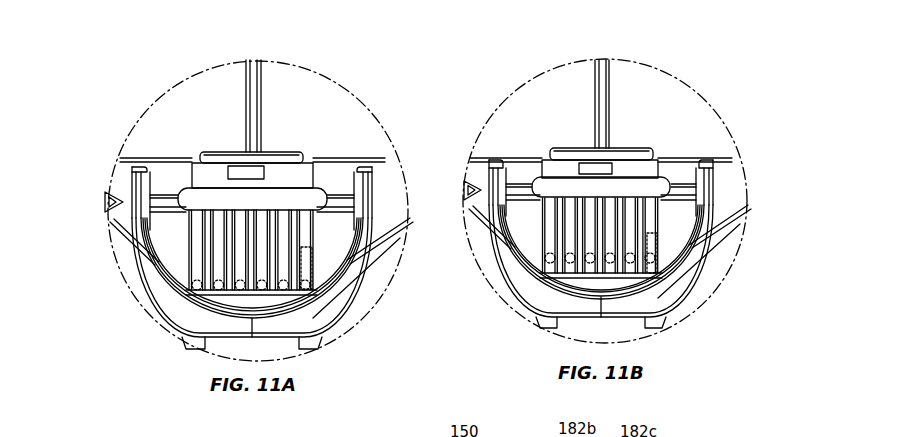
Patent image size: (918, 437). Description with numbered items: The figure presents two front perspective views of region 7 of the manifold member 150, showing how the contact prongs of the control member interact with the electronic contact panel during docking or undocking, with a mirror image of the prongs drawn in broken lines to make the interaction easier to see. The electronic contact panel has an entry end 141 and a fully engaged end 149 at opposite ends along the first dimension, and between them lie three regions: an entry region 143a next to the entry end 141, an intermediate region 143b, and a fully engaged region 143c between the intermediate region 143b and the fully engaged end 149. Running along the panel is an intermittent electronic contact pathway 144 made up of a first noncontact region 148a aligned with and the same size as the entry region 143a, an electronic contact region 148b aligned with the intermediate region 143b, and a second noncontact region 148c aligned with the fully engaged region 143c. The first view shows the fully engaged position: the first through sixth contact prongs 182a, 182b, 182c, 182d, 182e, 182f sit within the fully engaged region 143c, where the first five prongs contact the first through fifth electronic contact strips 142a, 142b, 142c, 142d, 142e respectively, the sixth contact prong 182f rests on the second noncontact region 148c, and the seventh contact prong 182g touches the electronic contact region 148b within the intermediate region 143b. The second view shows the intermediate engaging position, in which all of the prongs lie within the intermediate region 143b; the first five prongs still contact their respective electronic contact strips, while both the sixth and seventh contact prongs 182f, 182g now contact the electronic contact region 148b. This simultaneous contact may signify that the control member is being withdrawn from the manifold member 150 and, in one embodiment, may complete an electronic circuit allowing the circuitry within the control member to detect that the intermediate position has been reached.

In FIG. 11A, the region 7 is at (291, 62).
In FIG. 11B, the region 7 is at (651, 66).
In FIG. 11A, the entry end 141 is at (198, 168).
In FIG. 11B, the entry end 141 is at (545, 165).
In FIG. 11A, the first electronic contact strip 142a is at (195, 340).
In FIG. 11B, the first electronic contact strip 142a is at (545, 268).
In FIG. 11A, the second electronic contact strip 142b is at (200, 294).
In FIG. 11B, the second electronic contact strip 142b is at (540, 278).
In FIG. 11A, the third electronic contact strip 142c is at (218, 296).
In FIG. 11B, the third electronic contact strip 142c is at (575, 278).
In FIG. 11A, the fourth electronic contact strip 142d is at (263, 296).
In FIG. 11B, the fourth electronic contact strip 142d is at (612, 278).
In FIG. 11A, the fifth electronic contact strip 142e is at (287, 297).
In FIG. 11B, the fifth electronic contact strip 142e is at (665, 300).
In FIG. 11A, the entry region 143a is at (215, 245).
In FIG. 11B, the entry region 143a is at (552, 222).
In FIG. 11A, the intermediate region 143b is at (195, 272).
In FIG. 11B, the intermediate region 143b is at (493, 166).
In FIG. 11A, the fully engaged region 143c is at (205, 290).
In FIG. 11B, the fully engaged region 143c is at (690, 298).
In FIG. 11A, the intermittent electronic contact pathway 144 is at (353, 273).
In FIG. 11B, the intermittent electronic contact pathway 144 is at (690, 220).
In FIG. 11A, the first noncontact region 148a is at (340, 205).
In FIG. 11B, the first noncontact region 148a is at (696, 190).
In FIG. 11A, the electronic contact region 148b is at (362, 256).
In FIG. 11B, the electronic contact region 148b is at (738, 206).
In FIG. 11A, the second noncontact region 148c is at (300, 312).
In FIG. 11B, the second noncontact region 148c is at (685, 317).
In FIG. 11A, the fully engaged end 149 is at (193, 323).
In FIG. 11B, the fully engaged end 149 is at (680, 328).
In FIG. 11A, the manifold member 150 is at (130, 93).
In FIG. 11B, the manifold member 150 is at (524, 63).
In FIG. 11A, the first contact prong 182a is at (197, 280).
In FIG. 11B, the first contact prong 182a is at (552, 254).
In FIG. 11A, the second contact prong 182b is at (222, 265).
In FIG. 11B, the second contact prong 182b is at (563, 232).
In FIG. 11A, the third contact prong 182c is at (247, 270).
In FIG. 11B, the third contact prong 182c is at (601, 252).
In FIG. 11A, the fourth contact prong 182d is at (281, 268).
In FIG. 11B, the fourth contact prong 182d is at (628, 252).
In FIG. 11A, the fifth contact prong 182e is at (313, 262).
In FIG. 11B, the fifth contact prong 182e is at (660, 243).
In FIG. 11A, the sixth contact prong 182f is at (305, 300).
In FIG. 11B, the sixth contact prong 182f is at (655, 272).
In FIG. 11A, the seventh contact prong 182g is at (312, 284).
In FIG. 11B, the seventh contact prong 182g is at (660, 262).